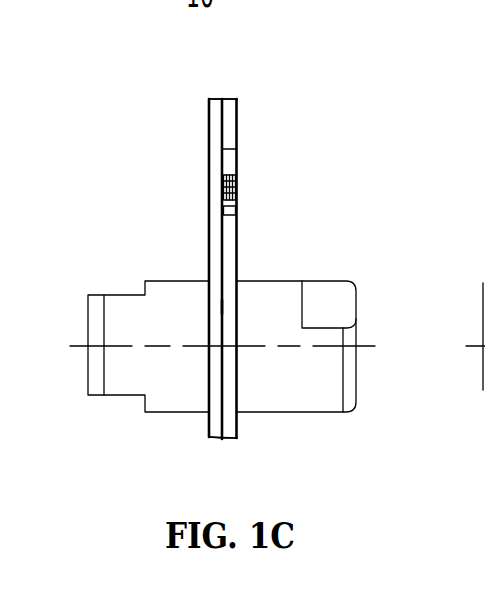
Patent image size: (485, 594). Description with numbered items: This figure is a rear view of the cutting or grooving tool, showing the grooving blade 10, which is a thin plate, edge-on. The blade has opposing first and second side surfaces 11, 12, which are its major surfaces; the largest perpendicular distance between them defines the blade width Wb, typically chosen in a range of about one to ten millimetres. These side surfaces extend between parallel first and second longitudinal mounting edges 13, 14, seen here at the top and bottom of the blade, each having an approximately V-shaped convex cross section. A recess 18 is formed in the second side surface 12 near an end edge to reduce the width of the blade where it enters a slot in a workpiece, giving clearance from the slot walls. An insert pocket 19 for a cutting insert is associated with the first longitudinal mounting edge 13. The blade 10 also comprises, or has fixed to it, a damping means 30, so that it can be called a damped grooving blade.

The grooving blade 10 is at (142, 172).
The first side surface 11 is at (238, 247).
The second side surface 12 is at (208, 235).
The first longitudinal mounting edge 13 is at (222, 98).
The second longitudinal mounting edge 14 is at (223, 440).
The recess 18 is at (222, 307).
The insert pocket 19 is at (238, 192).
The damping means 30 is at (353, 270).